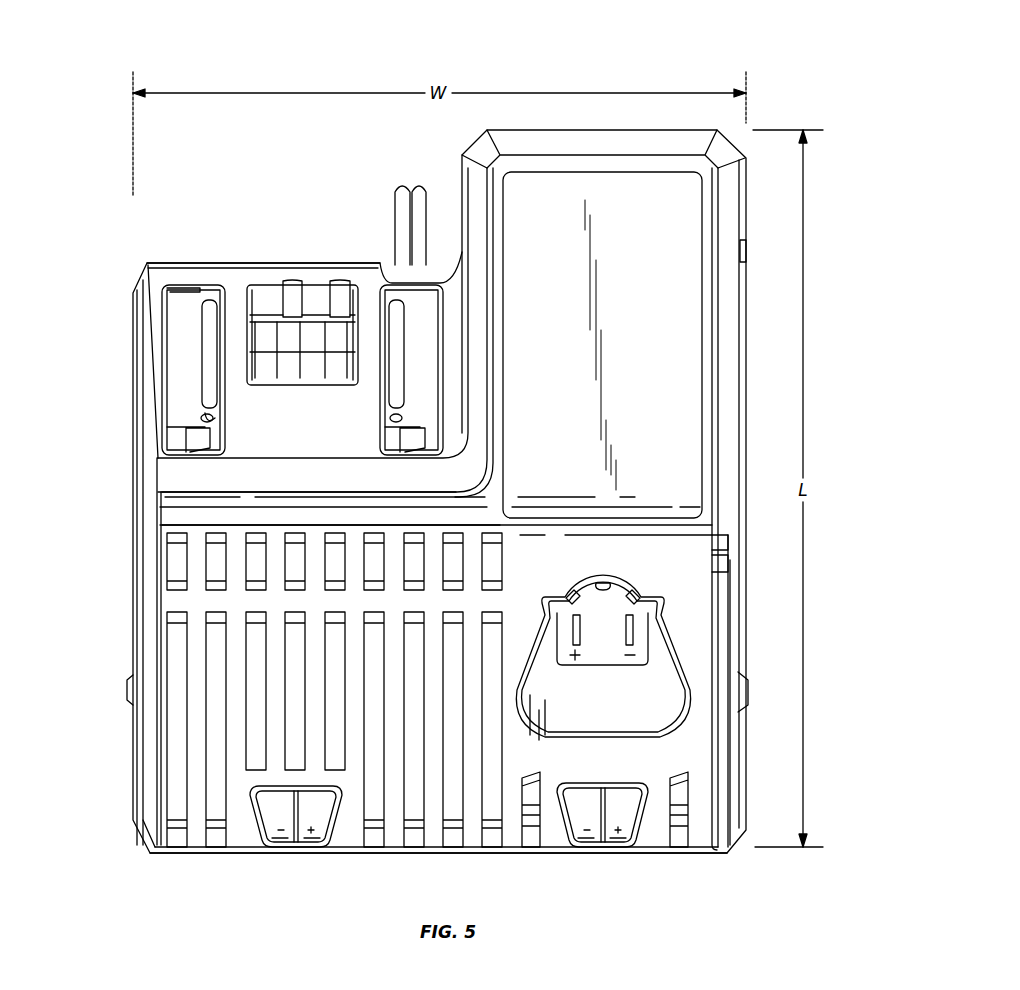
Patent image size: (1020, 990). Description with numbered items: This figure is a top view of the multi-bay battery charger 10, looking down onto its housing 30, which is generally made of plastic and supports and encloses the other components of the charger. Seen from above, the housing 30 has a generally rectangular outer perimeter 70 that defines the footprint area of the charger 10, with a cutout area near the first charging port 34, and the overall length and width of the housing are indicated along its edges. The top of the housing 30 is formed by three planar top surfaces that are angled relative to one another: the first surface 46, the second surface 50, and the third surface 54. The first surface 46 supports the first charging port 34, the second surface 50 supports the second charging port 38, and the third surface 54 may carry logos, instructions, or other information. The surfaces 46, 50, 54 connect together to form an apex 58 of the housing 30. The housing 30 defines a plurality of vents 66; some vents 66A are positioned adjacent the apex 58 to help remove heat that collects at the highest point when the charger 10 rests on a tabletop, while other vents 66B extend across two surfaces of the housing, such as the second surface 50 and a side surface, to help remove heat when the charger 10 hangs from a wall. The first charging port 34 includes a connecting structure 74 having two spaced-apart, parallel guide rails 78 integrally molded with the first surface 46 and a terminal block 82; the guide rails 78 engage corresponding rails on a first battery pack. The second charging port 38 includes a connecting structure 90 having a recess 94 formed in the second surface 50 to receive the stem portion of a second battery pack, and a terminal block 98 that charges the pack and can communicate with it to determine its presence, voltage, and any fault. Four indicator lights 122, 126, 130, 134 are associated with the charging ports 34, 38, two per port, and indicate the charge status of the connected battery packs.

The battery charger 10 is at (663, 65).
The housing 30 is at (136, 620).
The first charging port 34 is at (287, 248).
The second charging port 38 is at (688, 735).
The first surface 46 is at (185, 275).
The second surface 50 is at (176, 595).
The third surface 54 is at (527, 213).
The apex 58 is at (200, 497).
The vents 66 is at (252, 733).
The vents adjacent the apex 66A is at (178, 560).
The vents extending across two surfaces 66B is at (172, 800).
The outer perimeter 70 is at (140, 400).
The connecting structure 74 is at (165, 330).
The guide rails 78 is at (190, 357).
The terminal block 82 is at (293, 340).
The connecting structure 90 is at (532, 728).
The recess 94 is at (600, 722).
The terminal block 98 is at (600, 643).
The indicator light 122 is at (282, 840).
The indicator light 126 is at (305, 840).
The indicator light 130 is at (590, 840).
The indicator light 134 is at (615, 840).